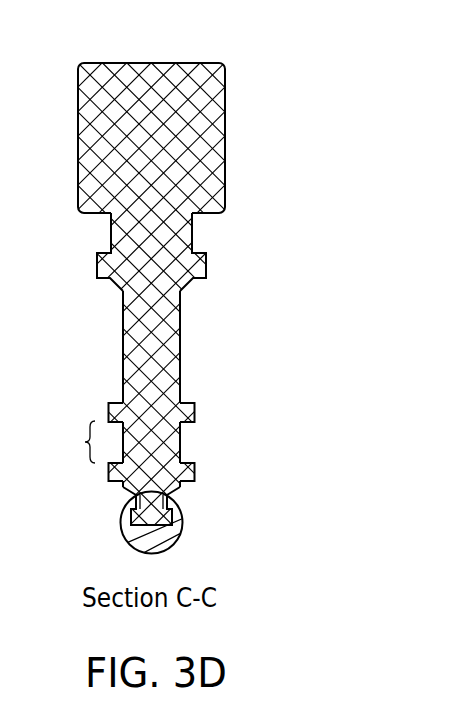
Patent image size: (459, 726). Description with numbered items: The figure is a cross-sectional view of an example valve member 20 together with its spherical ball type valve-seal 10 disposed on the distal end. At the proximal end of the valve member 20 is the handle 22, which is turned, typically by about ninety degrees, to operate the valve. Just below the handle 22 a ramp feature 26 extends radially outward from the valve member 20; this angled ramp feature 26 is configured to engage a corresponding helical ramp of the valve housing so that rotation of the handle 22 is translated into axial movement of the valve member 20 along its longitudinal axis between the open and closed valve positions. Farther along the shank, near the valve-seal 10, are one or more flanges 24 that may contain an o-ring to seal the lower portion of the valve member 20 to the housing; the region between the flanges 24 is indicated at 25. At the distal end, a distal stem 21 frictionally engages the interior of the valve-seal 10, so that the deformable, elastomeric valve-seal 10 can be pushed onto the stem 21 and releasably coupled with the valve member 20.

The handle 22 is at (225, 107).
The ramp feature 26 is at (207, 268).
The valve member 20 is at (181, 367).
The flanges 24 is at (195, 412).
The groove between ribs 25 is at (85, 442).
The distal stem 21 is at (174, 518).
The valve-seal 10 is at (183, 541).